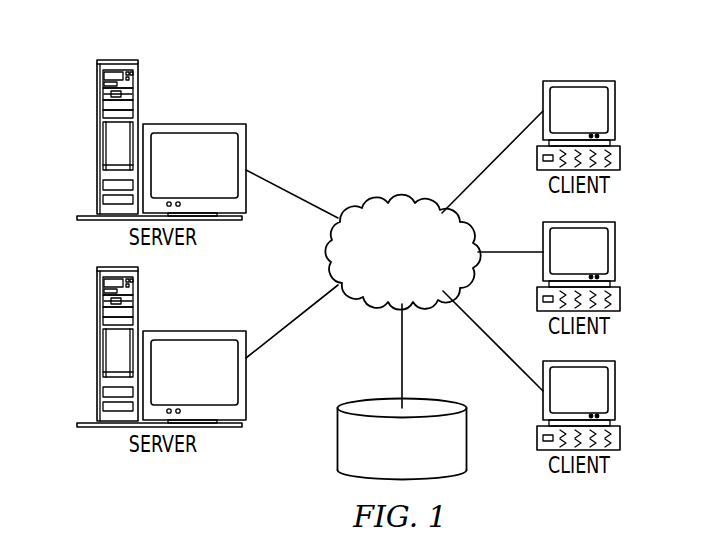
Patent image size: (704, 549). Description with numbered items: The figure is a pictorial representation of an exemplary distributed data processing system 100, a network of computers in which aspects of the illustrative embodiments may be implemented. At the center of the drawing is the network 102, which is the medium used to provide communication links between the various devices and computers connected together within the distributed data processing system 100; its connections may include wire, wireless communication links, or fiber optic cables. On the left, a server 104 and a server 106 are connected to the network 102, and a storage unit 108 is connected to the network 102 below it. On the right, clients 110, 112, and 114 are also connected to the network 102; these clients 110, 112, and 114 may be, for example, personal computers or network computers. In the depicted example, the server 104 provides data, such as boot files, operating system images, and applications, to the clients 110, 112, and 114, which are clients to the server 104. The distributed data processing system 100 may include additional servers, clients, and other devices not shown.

The distributed data processing system 100 is at (459, 65).
The network 102 is at (374, 205).
The server 104 is at (96, 142).
The server 106 is at (96, 348).
The storage unit 108 is at (338, 440).
The client 110 is at (615, 110).
The client 112 is at (615, 252).
The client 114 is at (615, 392).